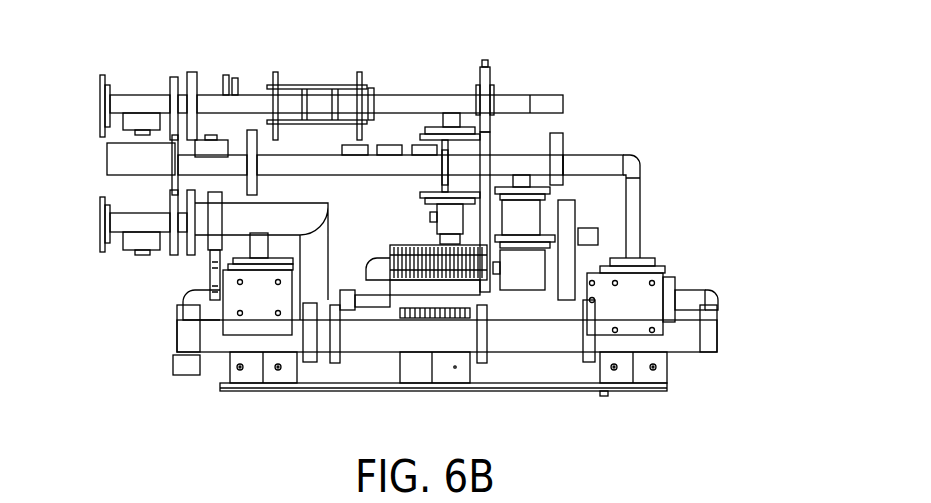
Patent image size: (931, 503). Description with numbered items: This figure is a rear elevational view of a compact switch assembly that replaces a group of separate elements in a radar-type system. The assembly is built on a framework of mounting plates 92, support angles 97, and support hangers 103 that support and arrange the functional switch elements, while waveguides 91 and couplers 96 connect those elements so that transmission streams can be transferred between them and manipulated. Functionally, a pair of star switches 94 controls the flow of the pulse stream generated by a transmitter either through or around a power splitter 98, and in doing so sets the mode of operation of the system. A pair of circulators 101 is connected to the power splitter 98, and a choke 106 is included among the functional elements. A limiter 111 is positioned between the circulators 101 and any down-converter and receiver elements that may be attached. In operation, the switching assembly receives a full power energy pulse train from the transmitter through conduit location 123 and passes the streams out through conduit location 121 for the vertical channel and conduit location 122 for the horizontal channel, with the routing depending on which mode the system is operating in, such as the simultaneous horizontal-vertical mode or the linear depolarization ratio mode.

The waveguide 91 is at (147, 104).
The mounting plate 92 is at (279, 86).
The star switch 94 is at (655, 270).
The coupler 96 is at (103, 82).
The support angle 97 is at (247, 375).
The power splitter 98 is at (437, 304).
The circulator 101 is at (388, 163).
The support hanger 103 is at (588, 348).
The choke 106 is at (452, 213).
The limiter 111 is at (505, 283).
The conduit location 121 is at (96, 104).
The conduit location 122 is at (162, 164).
The conduit location 123 is at (96, 228).